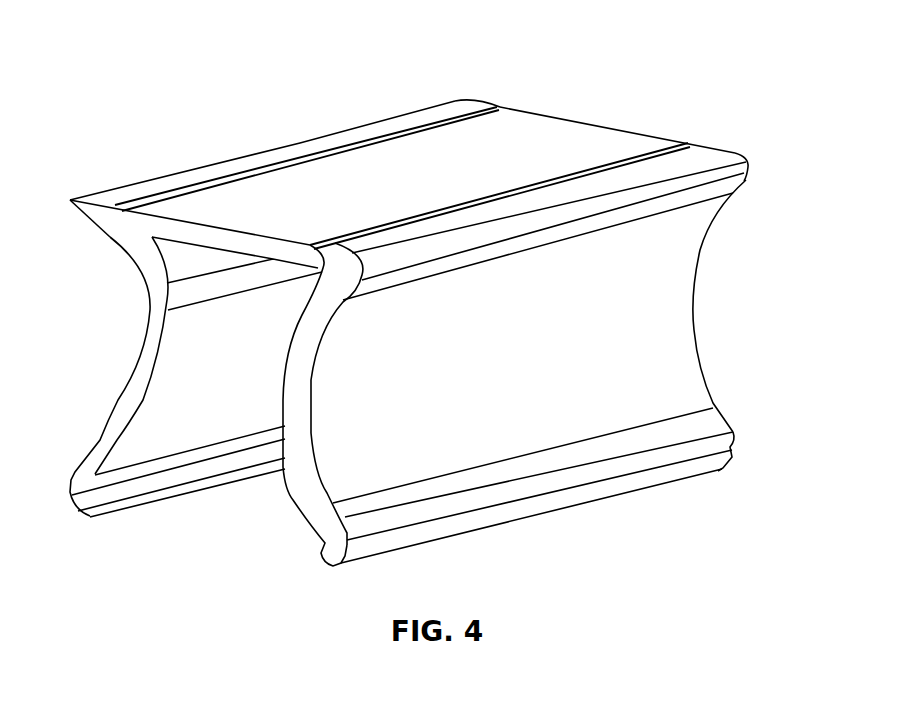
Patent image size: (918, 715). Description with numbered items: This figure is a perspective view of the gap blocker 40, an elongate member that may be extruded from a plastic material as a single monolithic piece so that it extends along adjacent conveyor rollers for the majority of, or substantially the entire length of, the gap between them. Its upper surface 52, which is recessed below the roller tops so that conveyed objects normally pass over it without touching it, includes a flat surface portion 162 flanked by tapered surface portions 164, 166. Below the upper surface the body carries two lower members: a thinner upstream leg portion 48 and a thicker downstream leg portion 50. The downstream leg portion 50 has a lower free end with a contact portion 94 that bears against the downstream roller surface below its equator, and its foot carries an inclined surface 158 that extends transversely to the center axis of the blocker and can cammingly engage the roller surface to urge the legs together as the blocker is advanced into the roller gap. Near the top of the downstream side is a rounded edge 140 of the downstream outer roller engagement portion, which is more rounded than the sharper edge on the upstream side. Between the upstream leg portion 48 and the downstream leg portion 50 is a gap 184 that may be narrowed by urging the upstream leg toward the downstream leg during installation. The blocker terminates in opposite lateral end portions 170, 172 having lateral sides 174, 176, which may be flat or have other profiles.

The gap blocker 40 is at (637, 133).
The upstream leg portion 48 is at (110, 443).
The downstream leg portion 50 is at (693, 373).
The upper surface 52 is at (498, 86).
The contact portion 94 is at (732, 440).
The rounded edge 140 is at (740, 173).
The inclined surface 158 is at (403, 537).
The flat surface portion 162 is at (573, 126).
The tapered surface portion 164 is at (447, 115).
The tapered surface portion 166 is at (713, 155).
The lateral end portion 170 is at (176, 402).
The lateral end portion 172 is at (544, 319).
The lateral side 174 is at (107, 220).
The lateral side 176 is at (538, 112).
The gap 184 is at (207, 510).